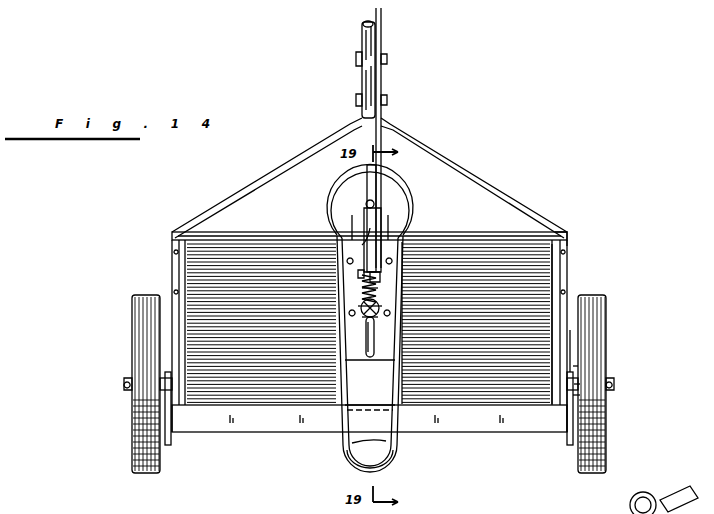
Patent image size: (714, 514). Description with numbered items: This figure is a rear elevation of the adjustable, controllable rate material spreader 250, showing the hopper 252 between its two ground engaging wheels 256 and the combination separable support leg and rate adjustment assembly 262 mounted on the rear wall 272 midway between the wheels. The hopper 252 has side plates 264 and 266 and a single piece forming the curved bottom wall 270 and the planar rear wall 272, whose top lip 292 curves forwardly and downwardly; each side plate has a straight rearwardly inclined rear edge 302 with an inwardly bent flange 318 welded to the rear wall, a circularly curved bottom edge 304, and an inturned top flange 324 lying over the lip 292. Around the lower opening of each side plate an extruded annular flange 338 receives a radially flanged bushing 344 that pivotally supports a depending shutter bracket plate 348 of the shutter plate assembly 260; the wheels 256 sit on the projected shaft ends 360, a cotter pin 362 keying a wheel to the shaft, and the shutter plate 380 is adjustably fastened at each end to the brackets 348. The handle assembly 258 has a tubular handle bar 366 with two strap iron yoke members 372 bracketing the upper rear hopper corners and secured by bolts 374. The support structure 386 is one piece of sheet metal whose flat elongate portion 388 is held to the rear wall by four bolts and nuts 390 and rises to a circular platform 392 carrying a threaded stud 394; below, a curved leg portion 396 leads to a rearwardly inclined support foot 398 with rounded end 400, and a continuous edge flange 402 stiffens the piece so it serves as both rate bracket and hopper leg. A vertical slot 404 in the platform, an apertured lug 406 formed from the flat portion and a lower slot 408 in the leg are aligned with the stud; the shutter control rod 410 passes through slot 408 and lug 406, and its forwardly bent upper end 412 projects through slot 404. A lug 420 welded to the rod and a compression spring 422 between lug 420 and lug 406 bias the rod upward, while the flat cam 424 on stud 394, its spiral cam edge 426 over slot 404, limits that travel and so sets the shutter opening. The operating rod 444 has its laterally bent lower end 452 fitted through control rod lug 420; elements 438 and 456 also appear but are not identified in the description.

The material spreader 250 is at (441, 129).
The hopper 252 is at (501, 207).
The wheels 256 is at (145, 313).
The handle assembly 258 is at (345, 95).
The shutter plate assembly 260 is at (192, 438).
The combination separable support leg and rate adjustment assembly 262 is at (432, 217).
The side plate 264 is at (562, 296).
The side plate 266 is at (172, 300).
The bottom wall 270 is at (522, 428).
The rear wall 272 is at (548, 272).
The top lip of rear wall 292 is at (515, 232).
The rear edge of side plate 302 is at (570, 318).
The bottom edge of side plate 304 is at (568, 425).
The inwardly bent flange 318 is at (576, 338).
The inturned flange 324 is at (563, 232).
The extruded annular flange 338 is at (578, 366).
The radially flanged bushing 344 is at (580, 378).
The shutter bracket plate 348 is at (585, 396).
The projected ends of agitator shaft 360 is at (124, 383).
The cotter pin 362 is at (124, 378).
The tubular handle bar 366 is at (364, 40).
The yoke members 372 is at (295, 156).
The bolts 374 is at (360, 66).
The shutter plate 380 is at (276, 425).
The support structure 386 is at (388, 300).
The flat elongate portion 388 is at (361, 276).
The bolts and nuts 390 is at (352, 256).
The circular platform 392 is at (330, 198).
The threaded stud 394 is at (362, 204).
The curved leg portion 396 is at (354, 368).
The support foot 398 is at (352, 411).
The rounded end 400 is at (350, 466).
The edge flange 402 is at (370, 443).
The vertical slot 404 is at (350, 220).
The apertured lug 406 is at (362, 306).
The lower elongate slot 408 is at (364, 328).
The shutter control rod 410 is at (376, 332).
The upper end of control rod 412 is at (372, 212).
The control rod lug 420 is at (392, 255).
The compression spring 422 is at (385, 275).
The cam 424 is at (392, 200).
The spiral cam edge 426 is at (356, 236).
The coupling 438 is at (630, 505).
The operating rod 444 is at (382, 42).
The lower end of operating rod 452 is at (365, 288).
The spring 456 is at (356, 274).